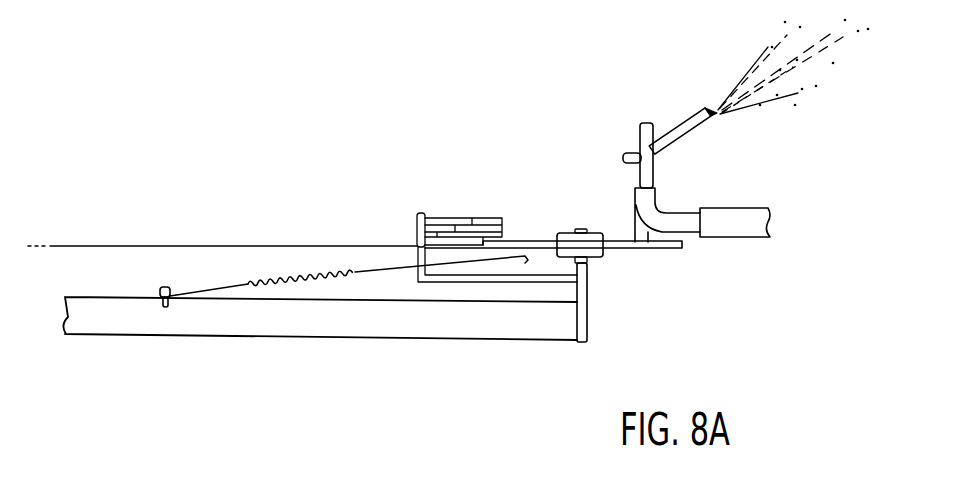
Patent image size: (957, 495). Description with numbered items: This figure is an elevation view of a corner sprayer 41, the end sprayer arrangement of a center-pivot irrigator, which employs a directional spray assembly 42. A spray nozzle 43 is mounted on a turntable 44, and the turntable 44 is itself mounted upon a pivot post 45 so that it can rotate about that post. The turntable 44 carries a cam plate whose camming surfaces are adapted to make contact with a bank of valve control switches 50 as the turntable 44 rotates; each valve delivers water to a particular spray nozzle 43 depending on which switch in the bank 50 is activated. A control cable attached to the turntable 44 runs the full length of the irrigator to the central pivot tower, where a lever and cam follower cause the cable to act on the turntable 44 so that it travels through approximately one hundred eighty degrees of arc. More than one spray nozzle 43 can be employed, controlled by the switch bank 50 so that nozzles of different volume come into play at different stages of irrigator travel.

The corner sprayer 41 is at (376, 370).
The directional spray assembly 42 is at (660, 274).
The spray nozzle 43 is at (687, 140).
The turntable 44 is at (658, 249).
The pivot post 45 is at (587, 283).
The bank of valve control switches 50 is at (378, 223).